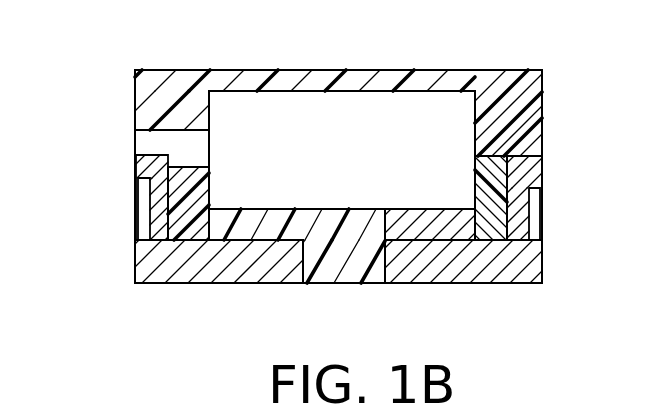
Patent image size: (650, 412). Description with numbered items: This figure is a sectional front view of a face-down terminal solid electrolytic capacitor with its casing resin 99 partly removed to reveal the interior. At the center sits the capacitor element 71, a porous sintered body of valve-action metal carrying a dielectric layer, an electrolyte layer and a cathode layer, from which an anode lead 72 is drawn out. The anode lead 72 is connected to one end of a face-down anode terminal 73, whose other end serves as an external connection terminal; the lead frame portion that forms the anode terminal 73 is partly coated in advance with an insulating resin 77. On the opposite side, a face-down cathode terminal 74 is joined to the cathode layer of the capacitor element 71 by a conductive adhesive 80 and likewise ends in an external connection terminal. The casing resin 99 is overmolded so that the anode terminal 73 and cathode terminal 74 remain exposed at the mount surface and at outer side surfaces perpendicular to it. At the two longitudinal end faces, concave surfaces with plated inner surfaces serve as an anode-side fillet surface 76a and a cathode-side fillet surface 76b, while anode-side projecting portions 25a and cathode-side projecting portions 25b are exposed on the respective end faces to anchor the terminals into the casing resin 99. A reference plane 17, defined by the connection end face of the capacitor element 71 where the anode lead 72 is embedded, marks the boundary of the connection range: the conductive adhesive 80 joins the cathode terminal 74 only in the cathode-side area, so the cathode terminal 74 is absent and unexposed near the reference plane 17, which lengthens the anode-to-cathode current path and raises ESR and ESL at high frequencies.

The reference plane 17 is at (208, 218).
The anode-side projecting portions 25a is at (148, 163).
The cathode-side projecting portions 25b is at (532, 165).
The capacitor element 71 is at (318, 110).
The anode lead 72 is at (178, 142).
The anode terminal 73 is at (224, 262).
The cathode terminal 74 is at (435, 263).
The anode-side fillet surface 76a is at (146, 220).
The cathode-side fillet surface 76b is at (543, 217).
The insulating resin 77 is at (238, 230).
The conductive adhesive 80 is at (450, 218).
The casing resin 99 is at (430, 82).